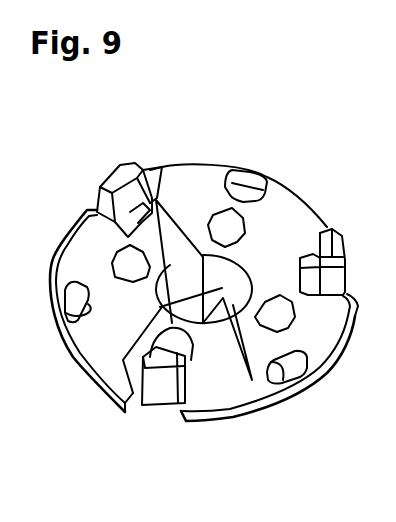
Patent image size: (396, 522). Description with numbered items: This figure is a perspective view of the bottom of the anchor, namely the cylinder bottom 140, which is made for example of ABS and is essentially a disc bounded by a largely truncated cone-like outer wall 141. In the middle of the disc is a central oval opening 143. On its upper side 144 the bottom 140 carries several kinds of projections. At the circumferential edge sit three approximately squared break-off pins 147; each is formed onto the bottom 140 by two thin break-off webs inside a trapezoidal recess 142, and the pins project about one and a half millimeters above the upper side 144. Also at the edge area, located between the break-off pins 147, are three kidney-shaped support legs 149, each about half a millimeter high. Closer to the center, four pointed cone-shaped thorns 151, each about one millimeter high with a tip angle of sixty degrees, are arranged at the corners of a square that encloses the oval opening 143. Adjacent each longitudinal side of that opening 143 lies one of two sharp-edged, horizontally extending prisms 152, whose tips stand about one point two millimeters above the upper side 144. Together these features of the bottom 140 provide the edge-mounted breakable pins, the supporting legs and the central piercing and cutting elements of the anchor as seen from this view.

The cylinder bottom 140 is at (281, 174).
The outer wall 141 is at (200, 426).
The trapezoidal recess 142 is at (161, 170).
The central oval opening 143 is at (133, 393).
The upper side 144 is at (255, 388).
The break-off pin 147 is at (120, 165).
The kidney-shaped support leg 149 is at (248, 183).
The pointed thorn 151 is at (128, 268).
The prism 152 is at (173, 232).